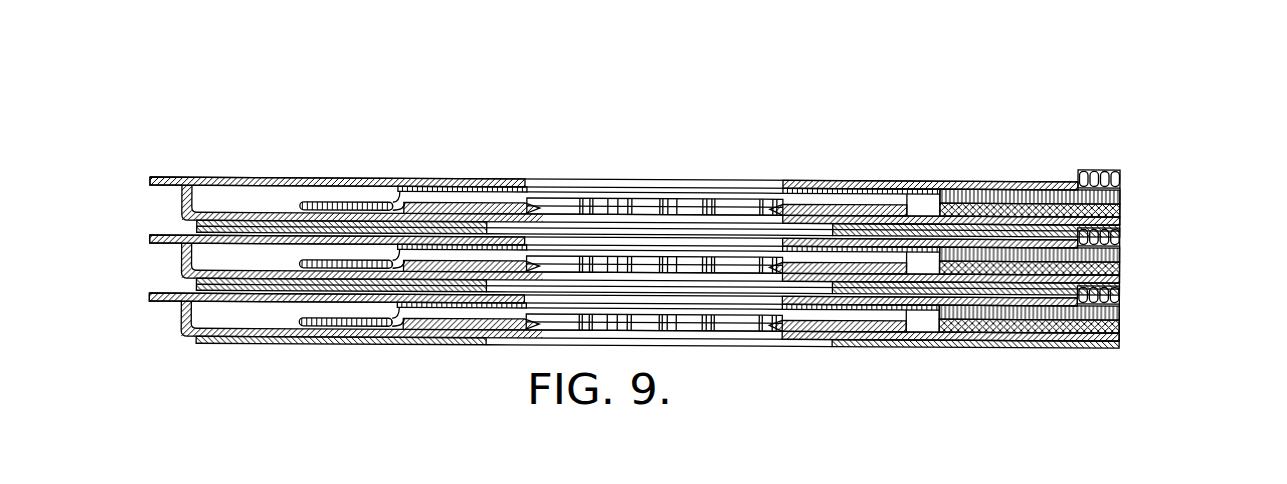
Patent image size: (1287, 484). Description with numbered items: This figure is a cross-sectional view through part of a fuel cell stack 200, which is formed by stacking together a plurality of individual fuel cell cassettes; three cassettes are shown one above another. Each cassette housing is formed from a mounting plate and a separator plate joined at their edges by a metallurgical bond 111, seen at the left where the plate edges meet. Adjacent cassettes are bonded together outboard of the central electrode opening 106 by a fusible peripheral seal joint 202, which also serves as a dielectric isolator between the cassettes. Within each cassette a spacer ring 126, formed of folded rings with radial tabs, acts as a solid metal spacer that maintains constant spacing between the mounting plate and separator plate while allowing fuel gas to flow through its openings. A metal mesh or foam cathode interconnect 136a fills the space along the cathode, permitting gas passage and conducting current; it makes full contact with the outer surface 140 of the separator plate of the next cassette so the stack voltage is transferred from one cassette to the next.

The metallurgical bond 111 is at (150, 181).
The fusible peripheral seal joint 202 is at (268, 280).
The fuel cell stack 200 is at (523, 121).
The spacer ring 126 is at (602, 313).
The cathode interconnect 136a is at (1122, 176).
The outer surface of the separator plate 140 is at (1122, 228).
The central electrode opening 106 is at (1220, 288).